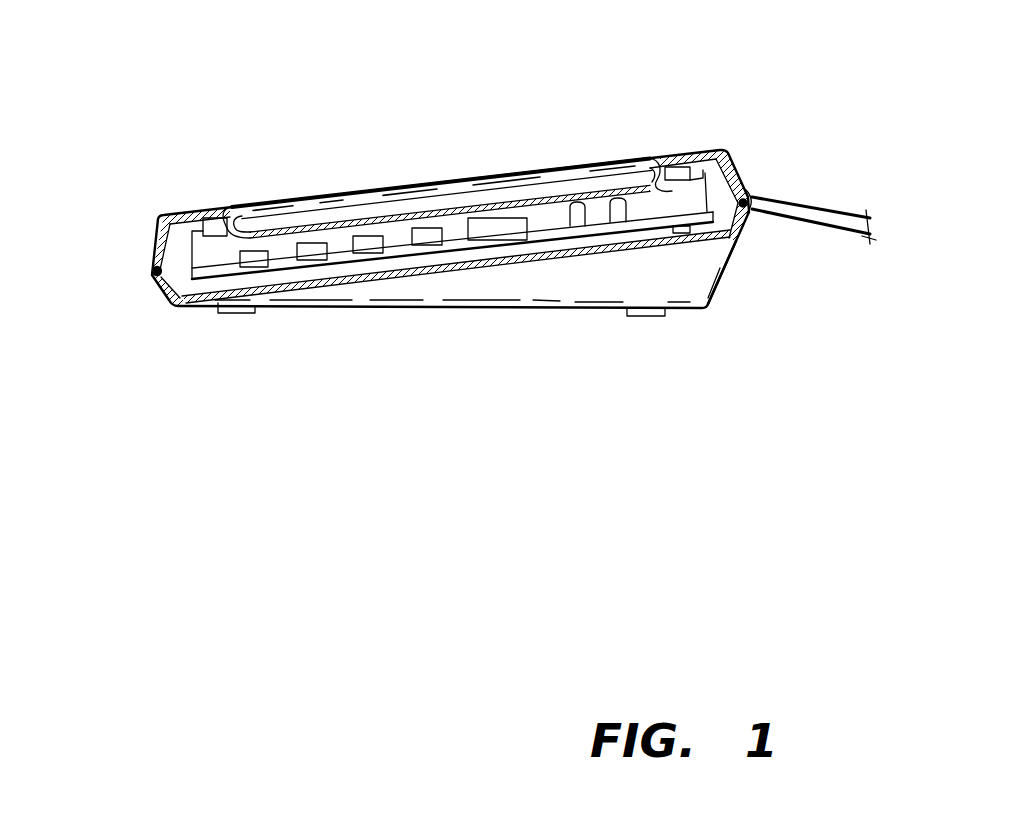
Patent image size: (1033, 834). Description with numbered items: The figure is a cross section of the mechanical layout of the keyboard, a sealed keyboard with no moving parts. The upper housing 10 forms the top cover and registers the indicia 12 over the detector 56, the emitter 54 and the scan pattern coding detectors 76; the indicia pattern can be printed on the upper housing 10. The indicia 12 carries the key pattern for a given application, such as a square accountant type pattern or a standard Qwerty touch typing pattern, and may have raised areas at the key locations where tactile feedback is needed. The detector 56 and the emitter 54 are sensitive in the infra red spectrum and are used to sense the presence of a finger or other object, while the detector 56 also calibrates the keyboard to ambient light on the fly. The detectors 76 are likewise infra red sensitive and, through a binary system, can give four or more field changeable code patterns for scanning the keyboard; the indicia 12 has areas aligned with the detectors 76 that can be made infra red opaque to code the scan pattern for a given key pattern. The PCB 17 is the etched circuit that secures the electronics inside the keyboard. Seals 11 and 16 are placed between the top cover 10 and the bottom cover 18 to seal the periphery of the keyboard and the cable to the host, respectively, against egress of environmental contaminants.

The upper housing 10 is at (164, 216).
The seal 11 is at (153, 276).
The indicia 12 is at (457, 208).
The seal 16 is at (752, 216).
The PCB 17 is at (332, 268).
The bottom cover 18 is at (684, 309).
The emitter 54 is at (677, 160).
The detector 56 is at (217, 215).
The scan pattern coding detectors 76 is at (575, 228).